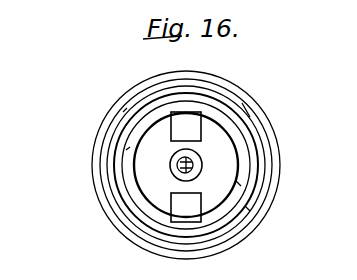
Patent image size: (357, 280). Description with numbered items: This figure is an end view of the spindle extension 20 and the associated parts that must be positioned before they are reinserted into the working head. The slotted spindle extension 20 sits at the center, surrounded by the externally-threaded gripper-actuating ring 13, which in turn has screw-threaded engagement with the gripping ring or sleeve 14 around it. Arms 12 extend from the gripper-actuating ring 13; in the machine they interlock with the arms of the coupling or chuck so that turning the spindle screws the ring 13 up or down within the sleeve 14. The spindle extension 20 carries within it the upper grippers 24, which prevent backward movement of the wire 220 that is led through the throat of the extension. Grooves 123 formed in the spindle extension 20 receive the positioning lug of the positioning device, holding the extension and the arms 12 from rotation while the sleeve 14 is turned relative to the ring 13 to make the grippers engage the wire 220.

The arms 12 is at (193, 113).
The gripper-actuating ring 13 is at (243, 203).
The gripping ring or sleeve 14 is at (243, 241).
The spindle extension 20 is at (225, 155).
The upper grippers 24 is at (176, 163).
The grooves 123 is at (192, 212).
The wire 220 is at (180, 167).